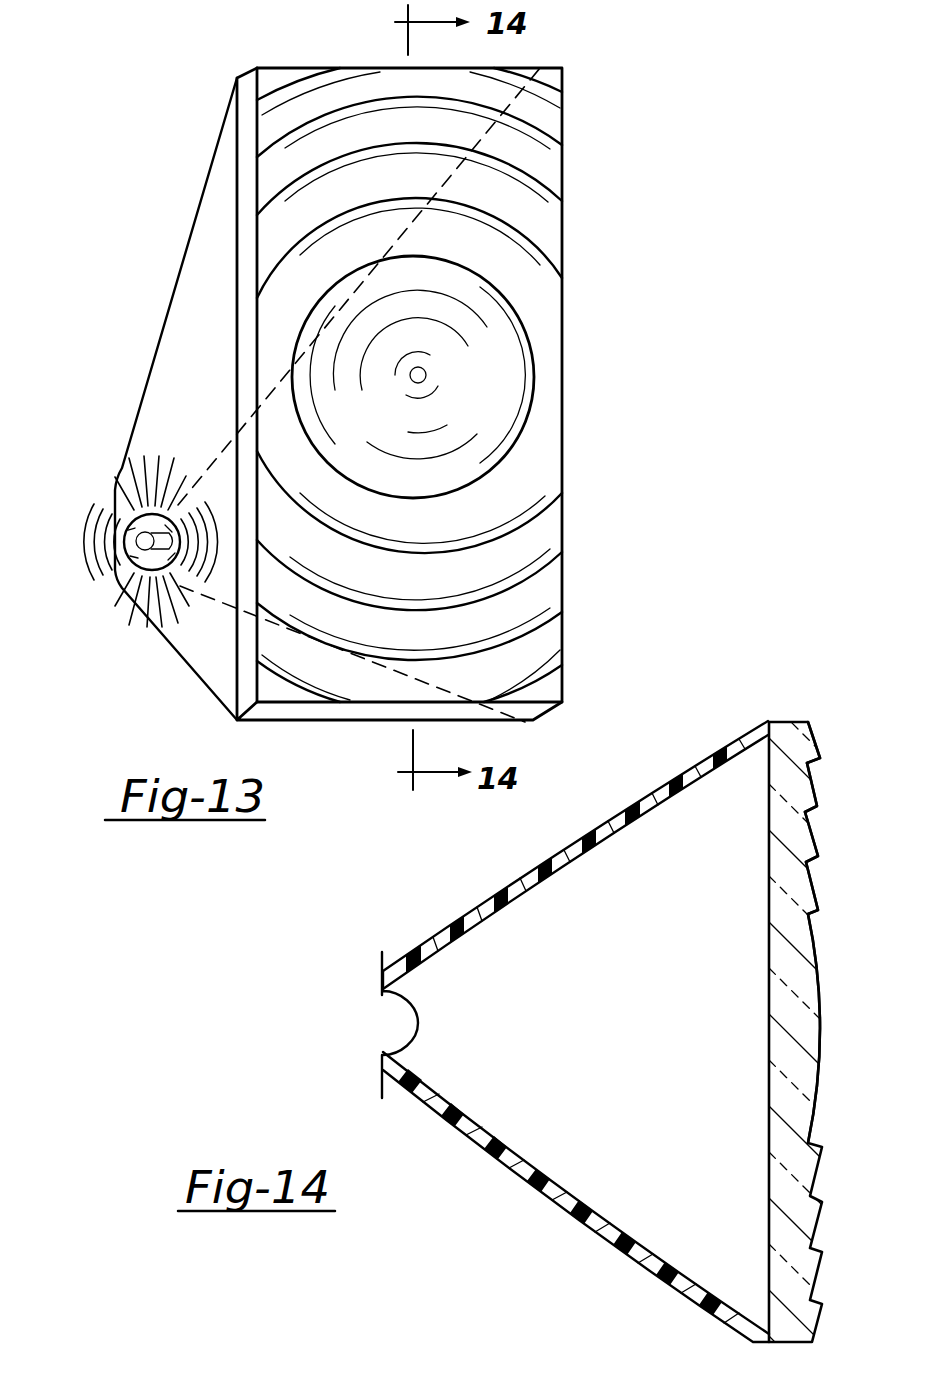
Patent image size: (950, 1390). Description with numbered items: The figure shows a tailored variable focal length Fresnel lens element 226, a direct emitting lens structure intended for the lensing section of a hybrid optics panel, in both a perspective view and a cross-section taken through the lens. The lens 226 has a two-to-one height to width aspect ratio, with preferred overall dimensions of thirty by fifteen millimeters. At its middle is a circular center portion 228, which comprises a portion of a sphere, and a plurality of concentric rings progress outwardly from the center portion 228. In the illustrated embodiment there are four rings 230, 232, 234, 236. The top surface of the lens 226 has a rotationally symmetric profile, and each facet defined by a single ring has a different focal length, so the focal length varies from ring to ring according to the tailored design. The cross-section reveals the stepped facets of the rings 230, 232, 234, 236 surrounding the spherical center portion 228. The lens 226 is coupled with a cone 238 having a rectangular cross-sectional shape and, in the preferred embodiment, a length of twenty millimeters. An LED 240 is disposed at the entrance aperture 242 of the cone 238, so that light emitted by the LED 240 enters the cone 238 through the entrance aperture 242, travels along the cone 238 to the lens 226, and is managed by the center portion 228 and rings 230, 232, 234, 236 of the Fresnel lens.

In FIG. 13, the tailored variable focal length Fresnel lens element 226 is at (582, 64).
In FIG. 14, the tailored variable focal length Fresnel lens element 226 is at (782, 696).
In FIG. 13, the circular center portion 228 is at (548, 383).
In FIG. 14, the circular center portion 228 is at (821, 990).
In FIG. 13, the ring 230 is at (565, 307).
In FIG. 14, the ring 230 is at (814, 893).
In FIG. 13, the ring 232 is at (565, 237).
In FIG. 14, the ring 232 is at (812, 822).
In FIG. 13, the ring 234 is at (565, 170).
In FIG. 14, the ring 234 is at (812, 785).
In FIG. 13, the ring 236 is at (565, 122).
In FIG. 14, the ring 236 is at (817, 740).
In FIG. 13, the cone 238 is at (183, 262).
In FIG. 14, the cone 238 is at (682, 778).
In FIG. 13, the LED 240 is at (124, 578).
In FIG. 14, the LED 240 is at (383, 1062).
In FIG. 13, the entrance aperture 242 is at (122, 508).
In FIG. 14, the entrance aperture 242 is at (406, 960).